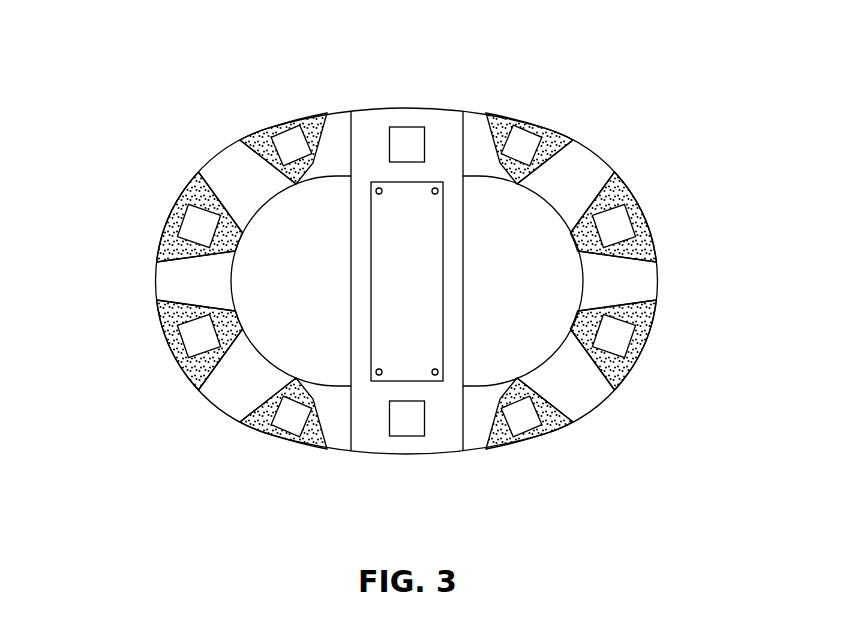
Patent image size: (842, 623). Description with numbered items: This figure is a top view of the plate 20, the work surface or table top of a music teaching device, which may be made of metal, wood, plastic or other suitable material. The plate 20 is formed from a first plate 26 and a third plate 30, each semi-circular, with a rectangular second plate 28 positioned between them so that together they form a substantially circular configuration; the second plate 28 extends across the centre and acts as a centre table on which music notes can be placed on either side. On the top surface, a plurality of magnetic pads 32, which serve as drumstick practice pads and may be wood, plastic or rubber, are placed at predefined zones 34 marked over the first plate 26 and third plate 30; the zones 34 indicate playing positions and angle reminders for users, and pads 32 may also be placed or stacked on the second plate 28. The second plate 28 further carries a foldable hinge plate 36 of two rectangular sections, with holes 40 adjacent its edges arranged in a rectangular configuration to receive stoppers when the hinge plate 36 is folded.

The plate 20 is at (278, 58).
The first plate 26 is at (173, 287).
The second plate 28 is at (486, 300).
The third plate 30 is at (643, 293).
The magnetic pad 32 is at (527, 142).
The zone 34 is at (250, 143).
The hinge plate 36 is at (383, 320).
The hole 40 is at (380, 190).